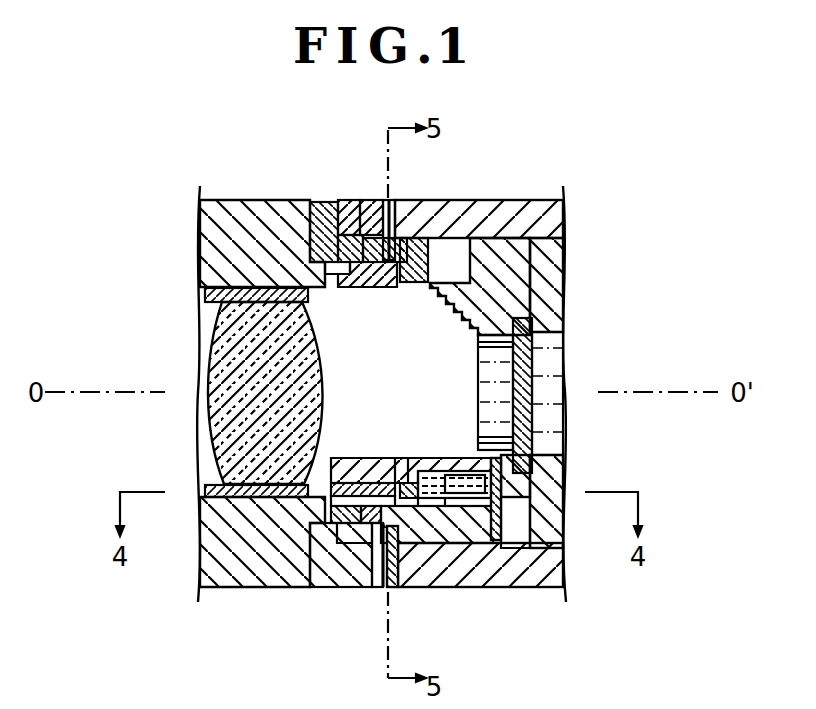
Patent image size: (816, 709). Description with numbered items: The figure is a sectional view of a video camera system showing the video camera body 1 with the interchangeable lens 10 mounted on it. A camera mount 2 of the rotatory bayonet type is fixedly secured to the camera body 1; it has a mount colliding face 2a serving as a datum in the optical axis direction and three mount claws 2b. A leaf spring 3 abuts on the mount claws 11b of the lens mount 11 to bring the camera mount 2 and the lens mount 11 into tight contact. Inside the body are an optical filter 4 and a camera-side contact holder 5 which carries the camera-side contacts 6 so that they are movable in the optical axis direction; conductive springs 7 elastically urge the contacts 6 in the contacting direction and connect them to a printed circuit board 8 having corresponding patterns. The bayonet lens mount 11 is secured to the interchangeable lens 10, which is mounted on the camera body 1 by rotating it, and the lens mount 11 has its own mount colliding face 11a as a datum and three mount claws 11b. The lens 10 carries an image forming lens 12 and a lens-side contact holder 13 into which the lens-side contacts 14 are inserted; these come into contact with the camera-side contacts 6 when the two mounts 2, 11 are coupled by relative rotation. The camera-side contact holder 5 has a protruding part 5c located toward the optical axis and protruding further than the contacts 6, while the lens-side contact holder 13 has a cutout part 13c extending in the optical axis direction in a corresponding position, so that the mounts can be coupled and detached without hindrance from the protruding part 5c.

The video camera body 1 is at (561, 213).
The camera mount 2 is at (356, 201).
The mount colliding face 2a is at (333, 201).
The mount claws 2b is at (382, 289).
The leaf spring 3 is at (401, 226).
The optical filter 4 is at (548, 369).
The camera-side contact holder 5 is at (482, 548).
The protruding part 5c is at (424, 457).
The camera-side contacts 6 is at (436, 544).
The conductive springs 7 is at (457, 457).
The printed circuit board 8 is at (512, 548).
The interchangeable lens 10 is at (218, 247).
The lens mount 11 is at (306, 203).
The mount colliding face 11a is at (335, 284).
The mount claws 11b is at (412, 284).
The image forming lens 12 is at (234, 353).
The lens-side contact holder 13 is at (354, 457).
The cutout part 13c is at (390, 457).
The lens-side contacts 14 is at (363, 588).